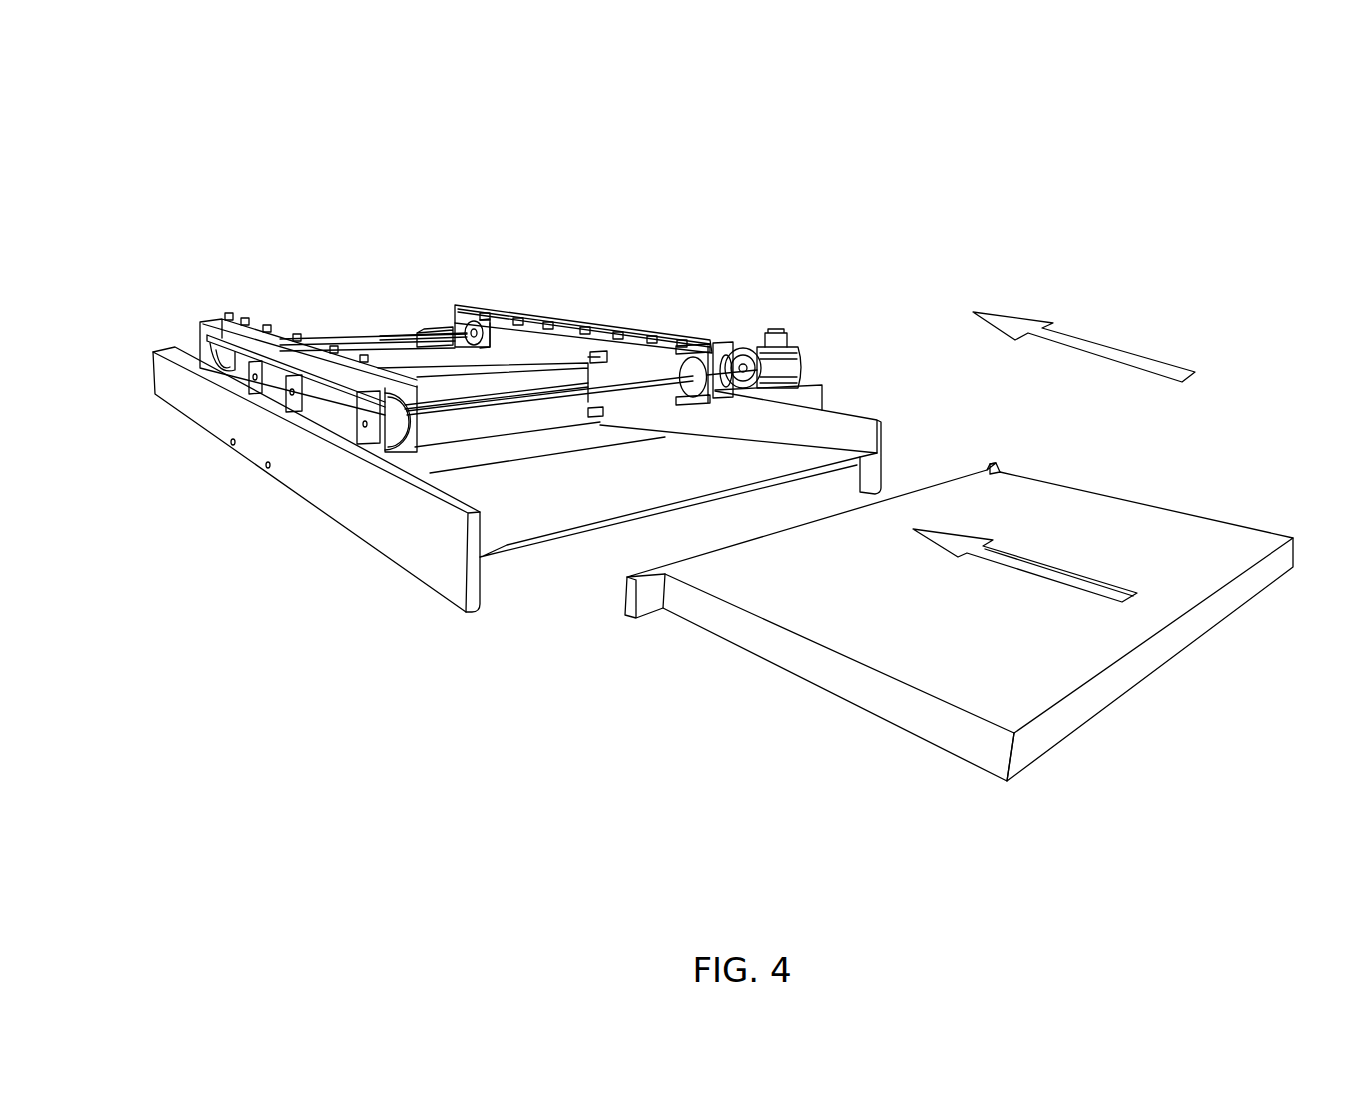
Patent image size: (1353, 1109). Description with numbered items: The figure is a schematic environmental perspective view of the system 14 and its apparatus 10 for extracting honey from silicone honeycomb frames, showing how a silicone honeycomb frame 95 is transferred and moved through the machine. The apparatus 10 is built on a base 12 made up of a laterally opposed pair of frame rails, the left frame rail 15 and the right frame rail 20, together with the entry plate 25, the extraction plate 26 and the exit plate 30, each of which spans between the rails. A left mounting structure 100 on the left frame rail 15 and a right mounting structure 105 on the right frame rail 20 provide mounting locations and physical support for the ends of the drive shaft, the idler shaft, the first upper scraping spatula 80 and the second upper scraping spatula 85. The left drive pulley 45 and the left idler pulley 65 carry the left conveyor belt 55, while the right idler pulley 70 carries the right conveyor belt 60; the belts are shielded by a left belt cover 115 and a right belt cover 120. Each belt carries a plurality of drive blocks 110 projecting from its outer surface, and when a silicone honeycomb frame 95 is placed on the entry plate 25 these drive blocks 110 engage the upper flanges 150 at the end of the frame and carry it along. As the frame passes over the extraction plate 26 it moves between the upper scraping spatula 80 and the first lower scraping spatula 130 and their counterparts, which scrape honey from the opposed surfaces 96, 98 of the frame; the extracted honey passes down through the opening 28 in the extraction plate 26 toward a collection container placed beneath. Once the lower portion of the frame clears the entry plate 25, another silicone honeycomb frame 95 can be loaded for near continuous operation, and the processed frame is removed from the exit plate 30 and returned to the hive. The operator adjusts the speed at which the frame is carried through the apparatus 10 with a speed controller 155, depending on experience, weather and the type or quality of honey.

The apparatus 10 is at (504, 387).
The base 12 is at (558, 546).
The system 14 is at (949, 274).
The left frame rail 15 is at (860, 410).
The right frame rail 20 is at (307, 483).
The entry plate 25 is at (492, 487).
The extraction plate 26 is at (617, 437).
The opening 28 is at (430, 462).
The exit plate 30 is at (390, 357).
The left drive pulley 45 is at (744, 350).
The left conveyor belt 55 is at (590, 322).
The right conveyor belt 60 is at (252, 355).
The left idler pulley 65 is at (502, 316).
The right idler pulley 70 is at (250, 357).
The first upper scraping spatula 80 is at (572, 377).
The second upper scraping spatula 85 is at (451, 355).
The silicone honeycomb frame 95 is at (895, 652).
The opposed surface 96 is at (1228, 545).
The opposed surface 98 is at (995, 763).
The left mounting structure 100 is at (622, 320).
The right mounting structure 105 is at (255, 393).
The drive blocks 110 is at (322, 377).
The left belt cover 115 is at (545, 308).
The right belt cover 120 is at (225, 320).
The first lower scraping spatula 130 is at (540, 410).
The upper flanges 150 is at (1000, 468).
The speed controller 155 is at (785, 338).